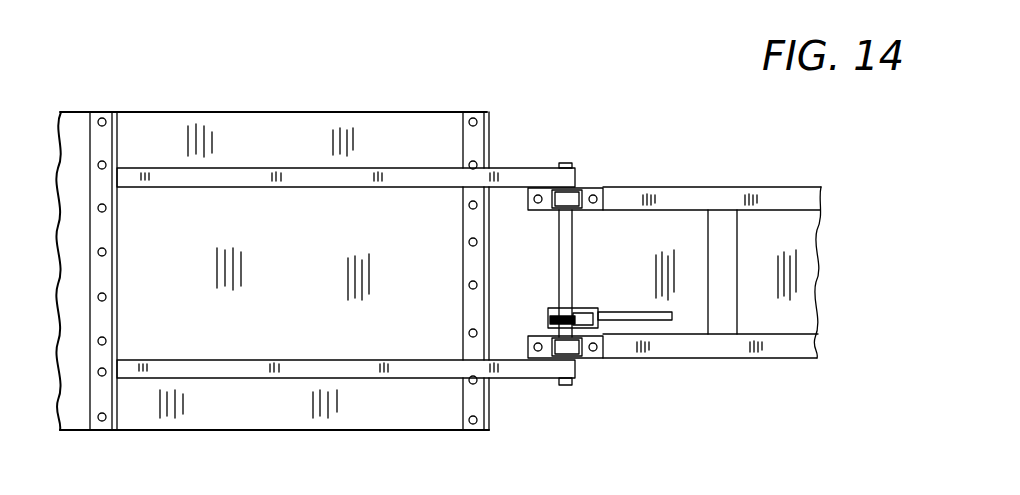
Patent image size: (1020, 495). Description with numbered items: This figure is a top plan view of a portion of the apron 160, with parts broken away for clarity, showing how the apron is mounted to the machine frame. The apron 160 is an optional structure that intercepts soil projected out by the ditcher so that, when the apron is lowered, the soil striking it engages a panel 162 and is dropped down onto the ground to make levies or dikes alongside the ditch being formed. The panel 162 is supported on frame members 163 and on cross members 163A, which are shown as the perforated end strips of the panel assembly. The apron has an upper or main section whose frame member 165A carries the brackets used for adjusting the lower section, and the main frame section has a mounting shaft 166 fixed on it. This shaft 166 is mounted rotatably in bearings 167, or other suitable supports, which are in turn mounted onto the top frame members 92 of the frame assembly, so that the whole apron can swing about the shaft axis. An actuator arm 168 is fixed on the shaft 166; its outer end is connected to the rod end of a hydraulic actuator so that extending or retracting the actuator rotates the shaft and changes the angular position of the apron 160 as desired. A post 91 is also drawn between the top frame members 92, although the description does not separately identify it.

The apron 160 is at (412, 68).
The panel 162 is at (233, 418).
The frame members 163 is at (326, 188).
The cross members 163A is at (112, 72).
The frame member 165A is at (279, 168).
The mounting shaft 166 is at (626, 132).
The bearings 167 is at (569, 255).
The actuator arm 168 is at (548, 316).
The post 91 is at (653, 228).
The top frame members 92 is at (739, 197).